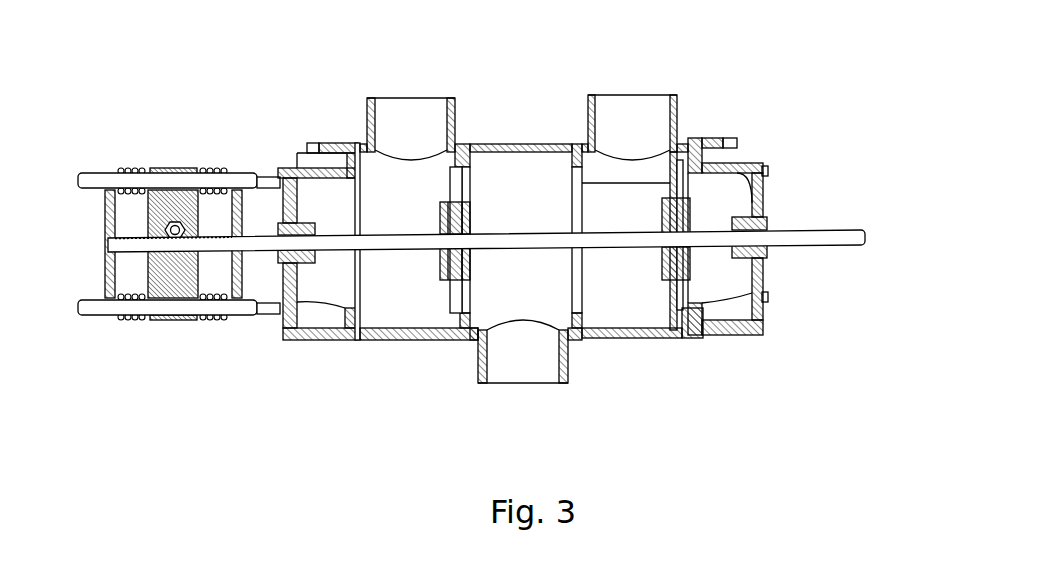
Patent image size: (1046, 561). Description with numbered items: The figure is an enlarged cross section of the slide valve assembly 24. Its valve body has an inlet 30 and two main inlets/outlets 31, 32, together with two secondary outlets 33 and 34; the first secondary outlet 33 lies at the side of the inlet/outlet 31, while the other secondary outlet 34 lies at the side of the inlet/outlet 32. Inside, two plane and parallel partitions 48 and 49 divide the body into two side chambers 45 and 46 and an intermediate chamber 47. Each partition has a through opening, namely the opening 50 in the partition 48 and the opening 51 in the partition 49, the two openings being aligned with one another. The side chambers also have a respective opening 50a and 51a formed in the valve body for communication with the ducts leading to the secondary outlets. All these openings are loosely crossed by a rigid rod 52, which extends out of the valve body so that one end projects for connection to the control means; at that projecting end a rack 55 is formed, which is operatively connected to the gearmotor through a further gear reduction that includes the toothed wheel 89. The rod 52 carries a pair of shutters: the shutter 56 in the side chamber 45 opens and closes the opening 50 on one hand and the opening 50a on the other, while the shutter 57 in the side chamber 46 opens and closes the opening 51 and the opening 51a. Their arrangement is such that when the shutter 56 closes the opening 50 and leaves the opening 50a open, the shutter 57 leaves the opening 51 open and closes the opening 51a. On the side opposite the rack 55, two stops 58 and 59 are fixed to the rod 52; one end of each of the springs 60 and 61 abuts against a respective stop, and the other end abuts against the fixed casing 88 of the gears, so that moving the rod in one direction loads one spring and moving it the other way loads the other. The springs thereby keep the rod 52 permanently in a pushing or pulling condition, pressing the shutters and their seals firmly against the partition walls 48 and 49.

The slide valve assembly 24 is at (797, 82).
The inlet 30 is at (538, 367).
The main inlet/outlet 31 is at (398, 115).
The main inlet/outlet 32 is at (635, 115).
The first secondary outlet 33 is at (332, 328).
The secondary outlet 34 is at (733, 323).
The side chamber 45 is at (420, 312).
The side chamber 46 is at (652, 307).
The intermediate chamber 47 is at (512, 172).
The partition 48 is at (466, 140).
The partition 49 is at (570, 143).
The through opening 50 is at (465, 300).
The opening 50a is at (350, 142).
The through opening 51 is at (578, 297).
The opening 51a is at (687, 173).
The rigid rod 52 is at (808, 235).
The rack 55 is at (128, 238).
The shutter 56 is at (458, 312).
The shutter 57 is at (683, 307).
The stop 58 is at (105, 280).
The stop 59 is at (238, 288).
The spring 60 is at (127, 170).
The spring 61 is at (218, 172).
The fixed casing 88 is at (170, 318).
The toothed wheel 89 is at (176, 222).